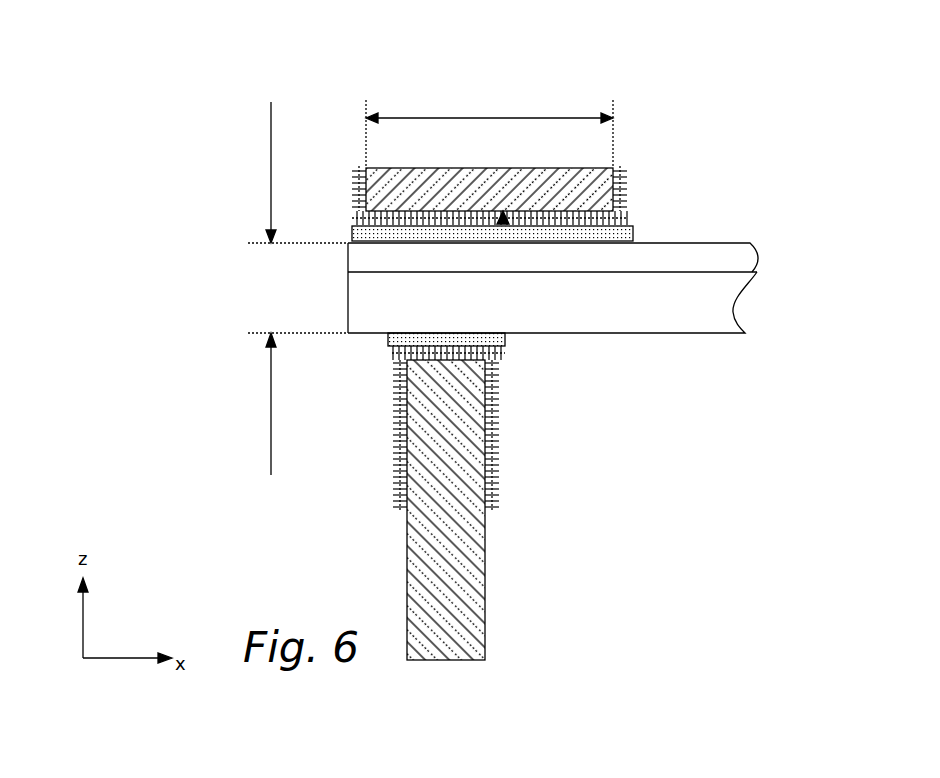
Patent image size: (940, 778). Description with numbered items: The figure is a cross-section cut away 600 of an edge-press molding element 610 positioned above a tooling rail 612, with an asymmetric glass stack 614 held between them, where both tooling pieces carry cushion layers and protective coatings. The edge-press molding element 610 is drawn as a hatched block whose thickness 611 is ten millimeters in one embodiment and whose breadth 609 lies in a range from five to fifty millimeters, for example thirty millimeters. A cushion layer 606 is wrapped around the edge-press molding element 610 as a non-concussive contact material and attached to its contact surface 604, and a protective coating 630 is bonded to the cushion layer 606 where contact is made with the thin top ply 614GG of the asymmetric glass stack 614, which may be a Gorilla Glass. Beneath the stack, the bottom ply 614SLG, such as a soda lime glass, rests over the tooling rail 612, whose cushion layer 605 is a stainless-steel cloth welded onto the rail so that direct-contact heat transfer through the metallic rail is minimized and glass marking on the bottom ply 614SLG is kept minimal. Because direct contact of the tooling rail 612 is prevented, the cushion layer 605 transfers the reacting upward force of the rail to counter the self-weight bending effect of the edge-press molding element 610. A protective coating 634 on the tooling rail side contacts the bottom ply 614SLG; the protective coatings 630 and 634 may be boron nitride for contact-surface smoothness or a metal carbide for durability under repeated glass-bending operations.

The cross-section cut away 600 is at (370, 73).
The contact surface 604 is at (503, 222).
The cushion layer 605 is at (393, 360).
The cushion layer 606 is at (628, 218).
The breadth 609 is at (470, 118).
The edge-press molding element 610 is at (598, 190).
The thickness 611 is at (270, 197).
The tooling rail 612 is at (452, 612).
The asymmetric glass stack 614 is at (248, 243).
The top ply 614GG is at (746, 247).
The bottom ply 614SLG is at (735, 322).
The protective coating 630 is at (567, 241).
The protective coating 634 is at (388, 340).